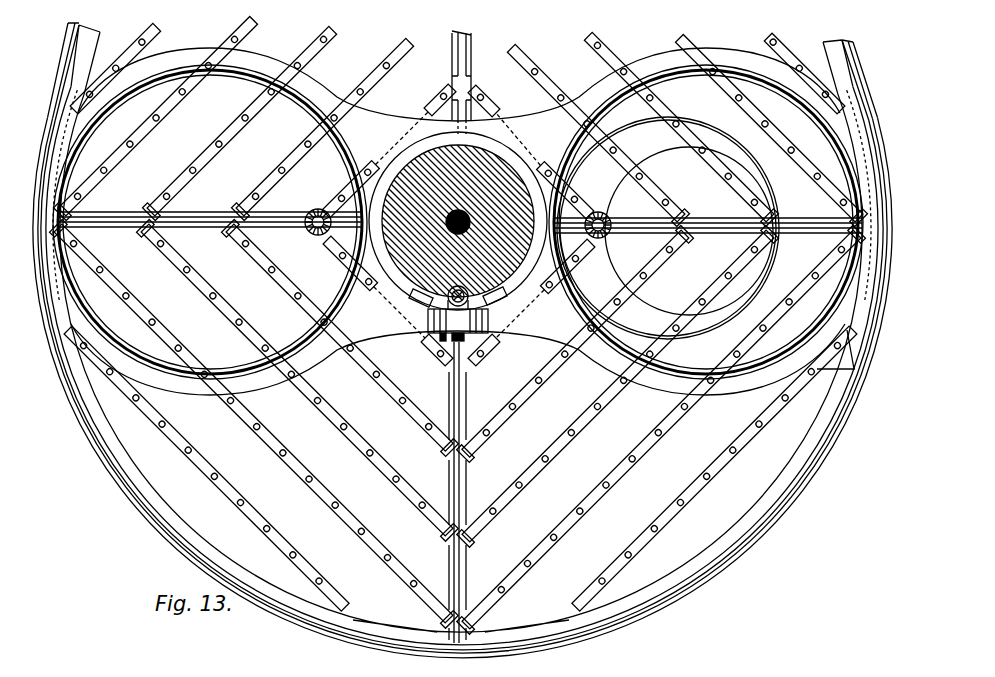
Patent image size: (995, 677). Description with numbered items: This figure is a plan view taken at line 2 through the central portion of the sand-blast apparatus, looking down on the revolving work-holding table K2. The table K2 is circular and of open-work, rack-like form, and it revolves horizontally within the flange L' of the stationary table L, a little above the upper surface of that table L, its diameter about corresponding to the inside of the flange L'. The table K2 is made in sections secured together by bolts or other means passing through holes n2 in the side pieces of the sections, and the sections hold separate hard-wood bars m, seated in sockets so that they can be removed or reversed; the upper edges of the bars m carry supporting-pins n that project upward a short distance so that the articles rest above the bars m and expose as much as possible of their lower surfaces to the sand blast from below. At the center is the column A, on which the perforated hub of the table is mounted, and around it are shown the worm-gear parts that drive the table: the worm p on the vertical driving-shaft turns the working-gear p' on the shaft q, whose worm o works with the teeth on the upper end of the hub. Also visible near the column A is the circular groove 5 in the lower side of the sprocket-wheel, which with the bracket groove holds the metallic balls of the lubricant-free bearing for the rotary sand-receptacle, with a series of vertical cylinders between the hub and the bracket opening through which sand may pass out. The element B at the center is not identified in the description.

The central shaft B is at (469, 222).
The column A is at (459, 221).
The circular groove 5 is at (470, 289).
The shaft q is at (412, 298).
The line 2 is at (492, 298).
The worm o is at (440, 342).
The worm p is at (480, 318).
The working-gear p' is at (487, 349).
The bar m is at (575, 344).
The supporting-pin n is at (550, 458).
The hole n2 is at (468, 492).
The work-holding table K2 is at (714, 468).
The stationary table L is at (462, 335).
The flange L' is at (462, 340).